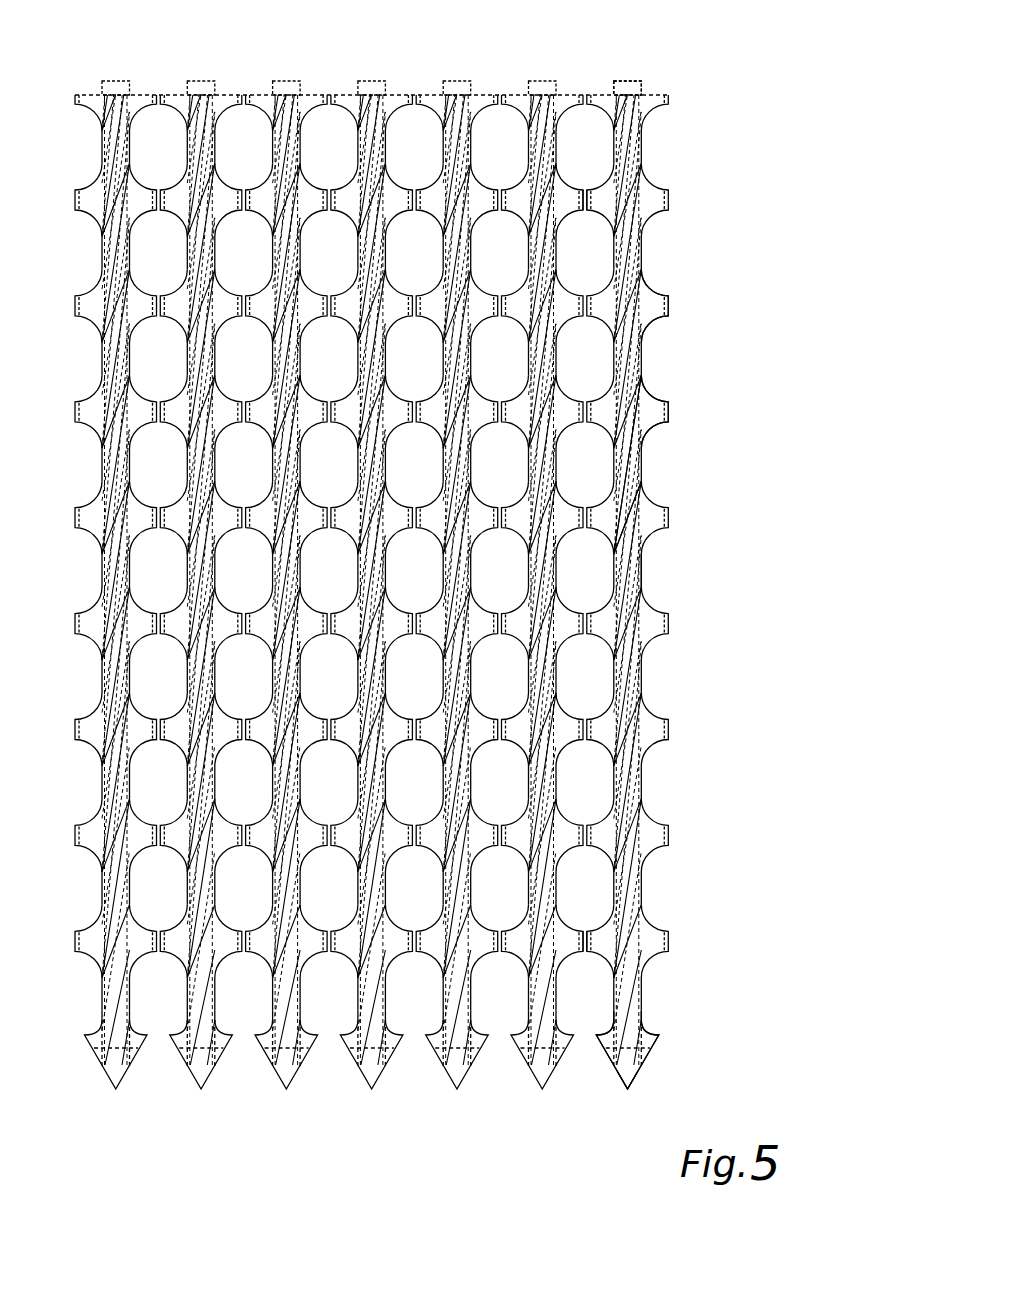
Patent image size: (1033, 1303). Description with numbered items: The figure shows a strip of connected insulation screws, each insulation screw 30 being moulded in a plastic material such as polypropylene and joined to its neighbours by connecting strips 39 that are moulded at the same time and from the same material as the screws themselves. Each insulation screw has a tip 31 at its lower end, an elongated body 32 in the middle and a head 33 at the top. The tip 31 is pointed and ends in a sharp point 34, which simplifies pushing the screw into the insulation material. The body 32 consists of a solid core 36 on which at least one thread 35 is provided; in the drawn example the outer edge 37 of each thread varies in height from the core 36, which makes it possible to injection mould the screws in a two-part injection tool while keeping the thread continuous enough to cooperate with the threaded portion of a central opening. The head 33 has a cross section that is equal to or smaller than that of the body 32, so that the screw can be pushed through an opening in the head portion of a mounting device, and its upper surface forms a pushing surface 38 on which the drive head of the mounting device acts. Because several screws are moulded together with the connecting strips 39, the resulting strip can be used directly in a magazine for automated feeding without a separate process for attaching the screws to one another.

The strip 30 is at (632, 167).
The tip 31 is at (677, 1048).
The body 32 is at (668, 330).
The head 33 is at (663, 82).
The sharp point 34 is at (640, 1092).
The thread 35 is at (625, 520).
The core 36 is at (635, 575).
The outer edge of a thread 37 is at (663, 390).
The pushing surface 38 is at (628, 81).
The connecting strips 39 is at (585, 197).